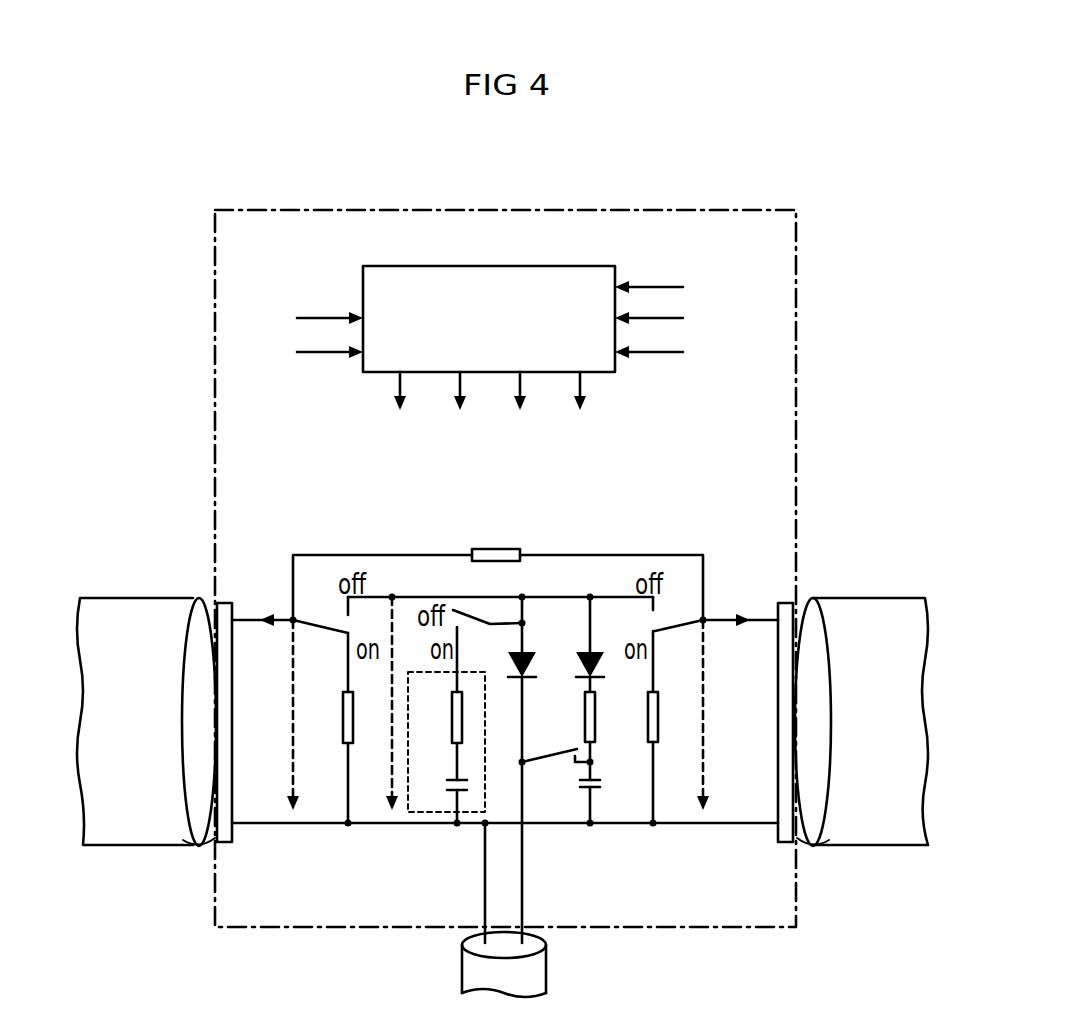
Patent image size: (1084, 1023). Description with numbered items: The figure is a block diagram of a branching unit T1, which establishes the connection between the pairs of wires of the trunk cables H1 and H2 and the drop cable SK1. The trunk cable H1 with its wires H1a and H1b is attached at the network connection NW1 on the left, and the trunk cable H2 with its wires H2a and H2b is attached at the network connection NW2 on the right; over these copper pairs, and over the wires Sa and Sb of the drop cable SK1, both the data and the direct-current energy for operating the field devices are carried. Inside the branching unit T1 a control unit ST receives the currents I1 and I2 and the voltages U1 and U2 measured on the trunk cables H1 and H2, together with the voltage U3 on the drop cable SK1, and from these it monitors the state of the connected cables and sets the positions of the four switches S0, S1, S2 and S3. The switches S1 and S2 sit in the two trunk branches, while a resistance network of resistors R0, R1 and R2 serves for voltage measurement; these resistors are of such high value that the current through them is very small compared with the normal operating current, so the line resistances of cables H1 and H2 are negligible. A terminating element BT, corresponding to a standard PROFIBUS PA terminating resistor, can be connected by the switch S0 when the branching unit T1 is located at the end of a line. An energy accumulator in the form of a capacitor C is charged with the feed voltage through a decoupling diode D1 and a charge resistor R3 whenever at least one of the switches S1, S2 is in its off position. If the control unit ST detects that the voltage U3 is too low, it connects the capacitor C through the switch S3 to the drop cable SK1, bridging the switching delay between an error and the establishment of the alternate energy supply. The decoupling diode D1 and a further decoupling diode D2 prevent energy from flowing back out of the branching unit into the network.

The branching unit T1 is at (213, 405).
The control unit ST is at (504, 332).
The voltage U1 is at (315, 556).
The current I1 is at (297, 481).
The voltage U2 is at (667, 556).
The voltage U3 is at (541, 540).
The current I2 is at (696, 481).
The switch S0 is at (486, 516).
The switch S1 is at (352, 502).
The switch S2 is at (636, 501).
The switch S3 is at (550, 586).
The resistor R0 is at (498, 568).
The resistor R1 is at (364, 730).
The resistor R2 is at (637, 729).
The charge resistor R3 is at (574, 736).
The decoupling diode D1 is at (584, 652).
The further decoupling diode D2 is at (517, 679).
The terminating element BT is at (446, 727).
The capacitor C is at (602, 784).
The wire Sa is at (525, 853).
The wire Sb is at (485, 853).
The drop cable SK1 is at (546, 972).
The trunk cable H1 is at (120, 598).
The wire H1a is at (212, 618).
The wire H1b is at (205, 835).
The network connection NW1 is at (217, 733).
The trunk cable H2 is at (890, 598).
The wire H2a is at (800, 617).
The wire H2b is at (800, 820).
The network connection NW2 is at (792, 735).